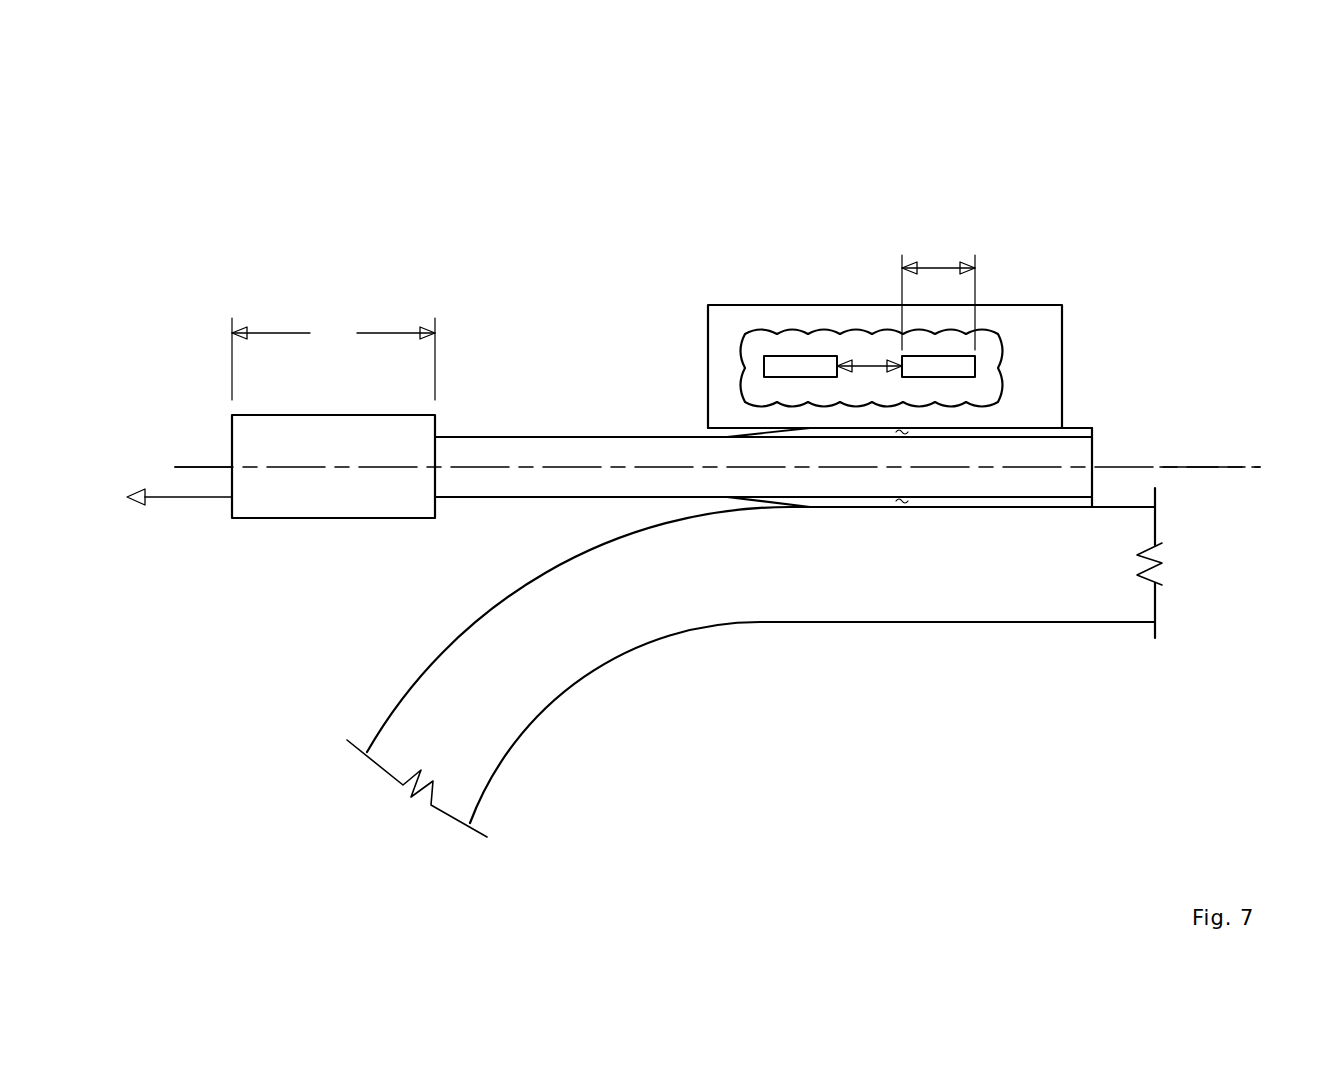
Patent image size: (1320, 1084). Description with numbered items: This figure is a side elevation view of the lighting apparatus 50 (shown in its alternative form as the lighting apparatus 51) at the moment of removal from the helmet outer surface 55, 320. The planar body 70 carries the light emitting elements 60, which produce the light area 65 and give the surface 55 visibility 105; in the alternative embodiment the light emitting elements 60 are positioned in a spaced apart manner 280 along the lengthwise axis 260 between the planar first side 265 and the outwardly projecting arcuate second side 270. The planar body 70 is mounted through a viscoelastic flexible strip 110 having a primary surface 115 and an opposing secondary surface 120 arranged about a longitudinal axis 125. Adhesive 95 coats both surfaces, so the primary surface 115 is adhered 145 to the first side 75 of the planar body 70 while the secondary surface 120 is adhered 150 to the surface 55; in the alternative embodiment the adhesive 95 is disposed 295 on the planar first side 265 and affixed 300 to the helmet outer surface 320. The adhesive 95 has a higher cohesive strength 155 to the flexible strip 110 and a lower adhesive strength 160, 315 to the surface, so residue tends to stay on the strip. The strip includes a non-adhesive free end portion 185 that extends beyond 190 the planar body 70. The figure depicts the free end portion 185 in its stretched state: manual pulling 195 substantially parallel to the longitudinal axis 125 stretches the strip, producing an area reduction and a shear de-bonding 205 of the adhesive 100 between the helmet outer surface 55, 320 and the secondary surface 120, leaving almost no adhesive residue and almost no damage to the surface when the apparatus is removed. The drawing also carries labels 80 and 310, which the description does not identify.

The lighting apparatus 50 is at (1218, 109).
The lighting apparatus 51 is at (1148, 138).
The surface 55 is at (1208, 509).
The helmet outer surface 320 is at (1142, 507).
The light emitting elements 60 is at (767, 364).
The visibility 105 is at (967, 367).
The light area 65 is at (941, 267).
The planar body 70 is at (885, 366).
The first side 75 is at (1145, 340).
The planar first side 265 is at (1042, 427).
The encapsulation 80 is at (857, 306).
The outwardly projecting arcuate second side 270 is at (755, 305).
The adhesive 95 is at (902, 435).
The adhesive 100 is at (751, 668).
The lower adhesive strength 160 is at (751, 668).
The affixed 300 is at (751, 668).
The lower adhesive strength 315 is at (943, 508).
The flexible strip 110 is at (763, 467).
The primary surface 115 is at (1077, 437).
The higher cohesive strength 155 is at (1068, 497).
The secondary surface 120 is at (1176, 416).
The longitudinal axis 125 is at (207, 467).
The adhered 145 is at (973, 358).
The disposed 295 is at (1022, 432).
The adhered 150 is at (1027, 626).
The straight section 310 is at (1002, 503).
The free end portion 185 is at (312, 500).
The extends beyond 190 is at (333, 359).
The pulling 195 is at (180, 497).
The shear de-bonding 205 is at (670, 508).
The lengthwise axis 260 is at (1223, 467).
The spaced apart manner 280 is at (868, 365).